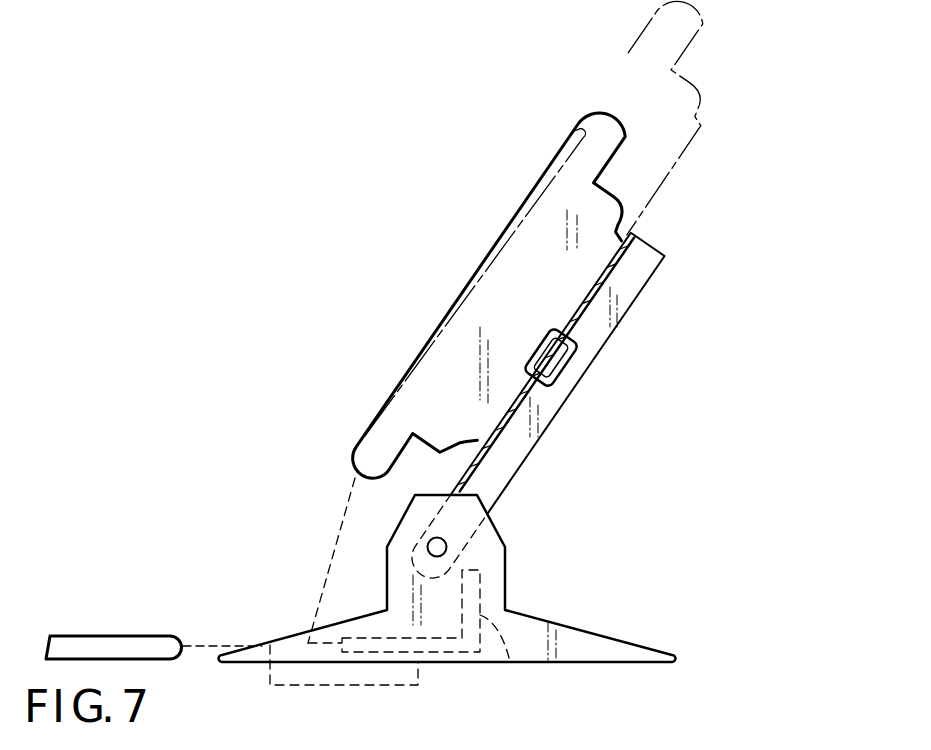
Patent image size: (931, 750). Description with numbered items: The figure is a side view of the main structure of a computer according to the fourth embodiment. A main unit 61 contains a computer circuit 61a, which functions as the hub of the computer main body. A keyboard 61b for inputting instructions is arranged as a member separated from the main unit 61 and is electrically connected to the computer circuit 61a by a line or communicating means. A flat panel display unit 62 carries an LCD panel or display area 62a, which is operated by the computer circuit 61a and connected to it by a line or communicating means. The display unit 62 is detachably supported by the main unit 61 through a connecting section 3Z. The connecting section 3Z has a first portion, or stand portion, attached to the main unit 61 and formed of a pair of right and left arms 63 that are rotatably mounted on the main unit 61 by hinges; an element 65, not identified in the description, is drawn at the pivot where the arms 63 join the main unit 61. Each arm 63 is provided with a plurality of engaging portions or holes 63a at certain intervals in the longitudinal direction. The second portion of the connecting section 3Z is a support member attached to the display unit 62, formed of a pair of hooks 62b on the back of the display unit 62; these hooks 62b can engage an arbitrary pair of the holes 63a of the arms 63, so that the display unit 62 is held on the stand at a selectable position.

The connecting section 3Z is at (684, 226).
The main unit 61 is at (285, 632).
The computer circuit 61a is at (515, 663).
The keyboard 61b is at (108, 637).
The display unit 62 is at (594, 100).
The LCD panel 62a is at (478, 284).
The hooks 62b is at (563, 372).
The arms 63 is at (578, 408).
The holes 63a is at (607, 278).
The pivot pin 65 is at (428, 543).